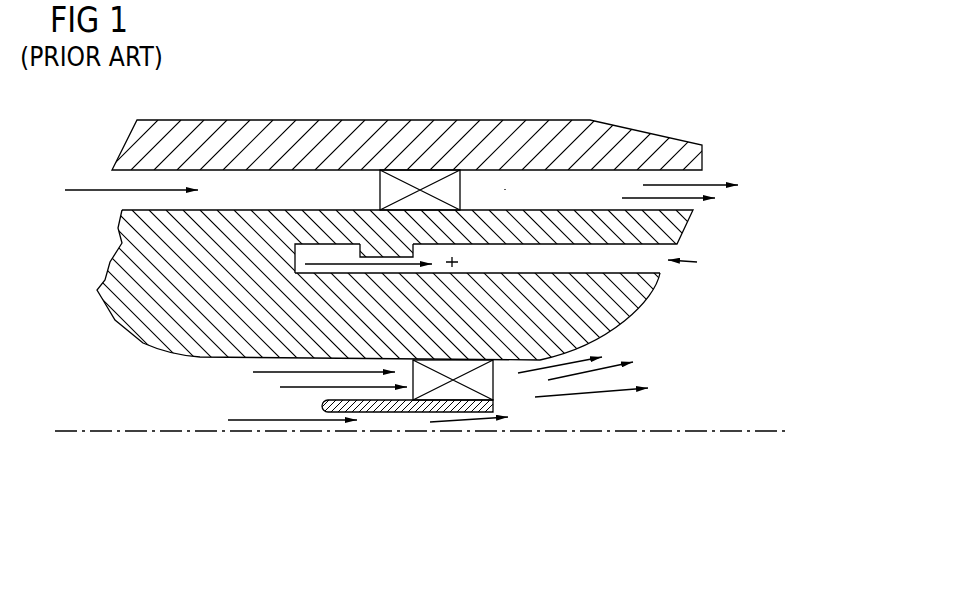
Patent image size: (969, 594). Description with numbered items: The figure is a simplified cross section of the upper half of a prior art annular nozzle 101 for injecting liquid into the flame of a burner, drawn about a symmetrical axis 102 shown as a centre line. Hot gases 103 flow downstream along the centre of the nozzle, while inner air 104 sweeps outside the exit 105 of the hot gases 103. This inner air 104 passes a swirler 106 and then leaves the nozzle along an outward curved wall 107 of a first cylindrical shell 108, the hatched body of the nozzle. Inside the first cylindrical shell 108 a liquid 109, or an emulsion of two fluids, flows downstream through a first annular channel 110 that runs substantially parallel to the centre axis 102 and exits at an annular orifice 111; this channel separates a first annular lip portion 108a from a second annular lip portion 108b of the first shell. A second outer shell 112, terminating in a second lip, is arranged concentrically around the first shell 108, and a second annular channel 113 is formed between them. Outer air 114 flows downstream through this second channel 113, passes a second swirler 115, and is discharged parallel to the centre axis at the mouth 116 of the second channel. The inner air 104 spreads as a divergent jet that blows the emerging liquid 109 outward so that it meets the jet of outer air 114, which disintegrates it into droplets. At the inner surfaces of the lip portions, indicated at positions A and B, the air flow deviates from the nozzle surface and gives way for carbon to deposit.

The nozzle 101 is at (558, 102).
The symmetrical axis 102 is at (790, 430).
The hot gases 103 is at (240, 420).
The inner air 104 is at (295, 387).
The exit 105 is at (476, 452).
The swirler 106 is at (487, 380).
The outward curved wall 107 is at (633, 315).
The first cylindrical shell 108 is at (115, 322).
The first annular lip portion 108a is at (618, 337).
The second annular lip portion 108b is at (677, 243).
The liquid 109 is at (335, 258).
The first annular channel 110 is at (458, 262).
The annular orifice 111 is at (697, 262).
The second outer shell 112 is at (135, 127).
The second annular channel 113 is at (505, 188).
The outer air 114 is at (87, 190).
The second swirler 115 is at (417, 178).
The mouth 116 is at (706, 177).
The position A is at (659, 284).
The position B is at (690, 224).